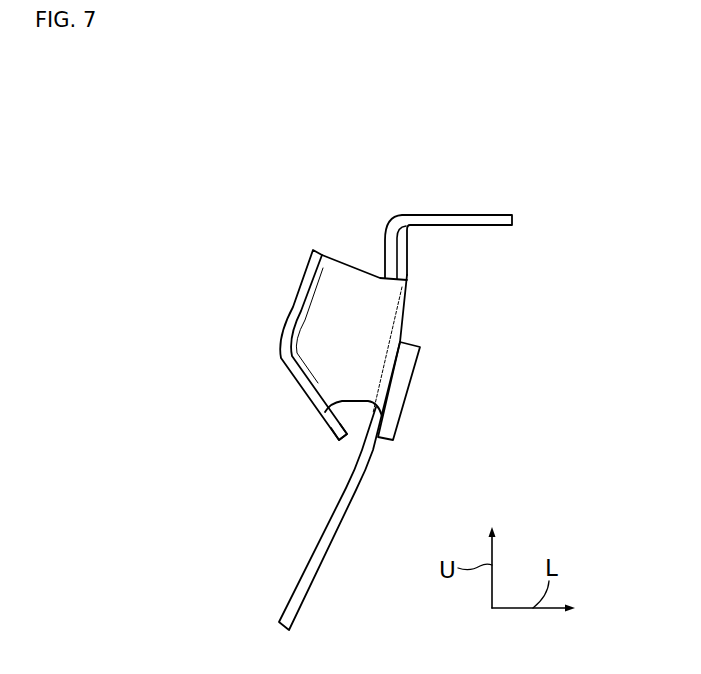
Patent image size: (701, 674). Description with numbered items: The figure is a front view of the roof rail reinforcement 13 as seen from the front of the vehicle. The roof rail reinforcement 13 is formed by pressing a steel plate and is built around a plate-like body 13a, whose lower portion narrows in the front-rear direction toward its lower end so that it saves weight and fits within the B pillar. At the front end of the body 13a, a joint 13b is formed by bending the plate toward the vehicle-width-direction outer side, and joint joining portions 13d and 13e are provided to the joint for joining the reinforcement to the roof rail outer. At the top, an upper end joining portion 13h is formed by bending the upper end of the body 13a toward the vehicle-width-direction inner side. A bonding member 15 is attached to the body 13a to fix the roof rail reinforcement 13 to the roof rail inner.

The roof rail reinforcement 13 is at (292, 150).
The body 13a is at (320, 542).
The joint 13b is at (354, 266).
The joint joining portion 13d is at (299, 280).
The joint joining portion 13e is at (307, 404).
The upper end joining portion 13h is at (455, 215).
The bonding member 15 is at (421, 354).